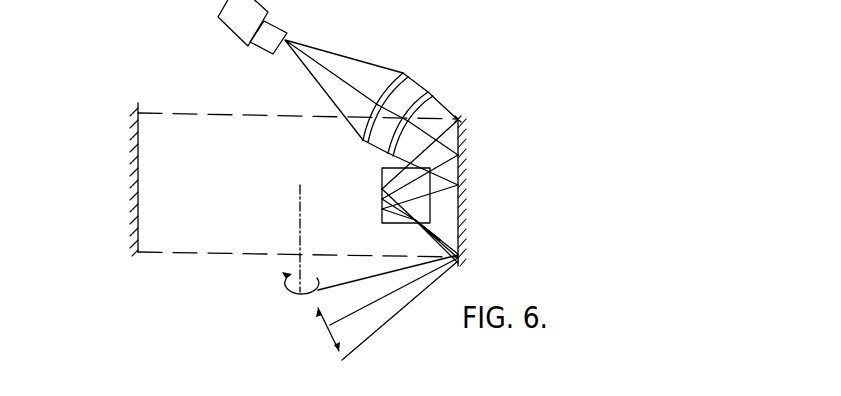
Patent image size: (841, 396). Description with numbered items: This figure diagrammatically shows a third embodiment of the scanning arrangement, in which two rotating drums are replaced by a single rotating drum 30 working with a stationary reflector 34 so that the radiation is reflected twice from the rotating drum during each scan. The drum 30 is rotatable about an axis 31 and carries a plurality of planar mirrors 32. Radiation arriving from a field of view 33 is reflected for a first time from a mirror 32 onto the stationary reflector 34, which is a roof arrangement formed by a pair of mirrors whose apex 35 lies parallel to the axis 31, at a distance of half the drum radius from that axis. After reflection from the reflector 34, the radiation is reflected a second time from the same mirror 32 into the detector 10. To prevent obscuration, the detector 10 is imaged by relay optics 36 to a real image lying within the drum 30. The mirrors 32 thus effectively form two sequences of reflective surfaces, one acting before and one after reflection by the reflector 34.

The detector 10 is at (252, 27).
The drum 30 is at (136, 158).
The axis 31 is at (283, 279).
The planar mirrors 32 is at (138, 135).
The field of view 33 is at (320, 330).
The stationary reflector 34 is at (425, 214).
The apex 35 is at (381, 175).
The relay optics 36 is at (436, 74).